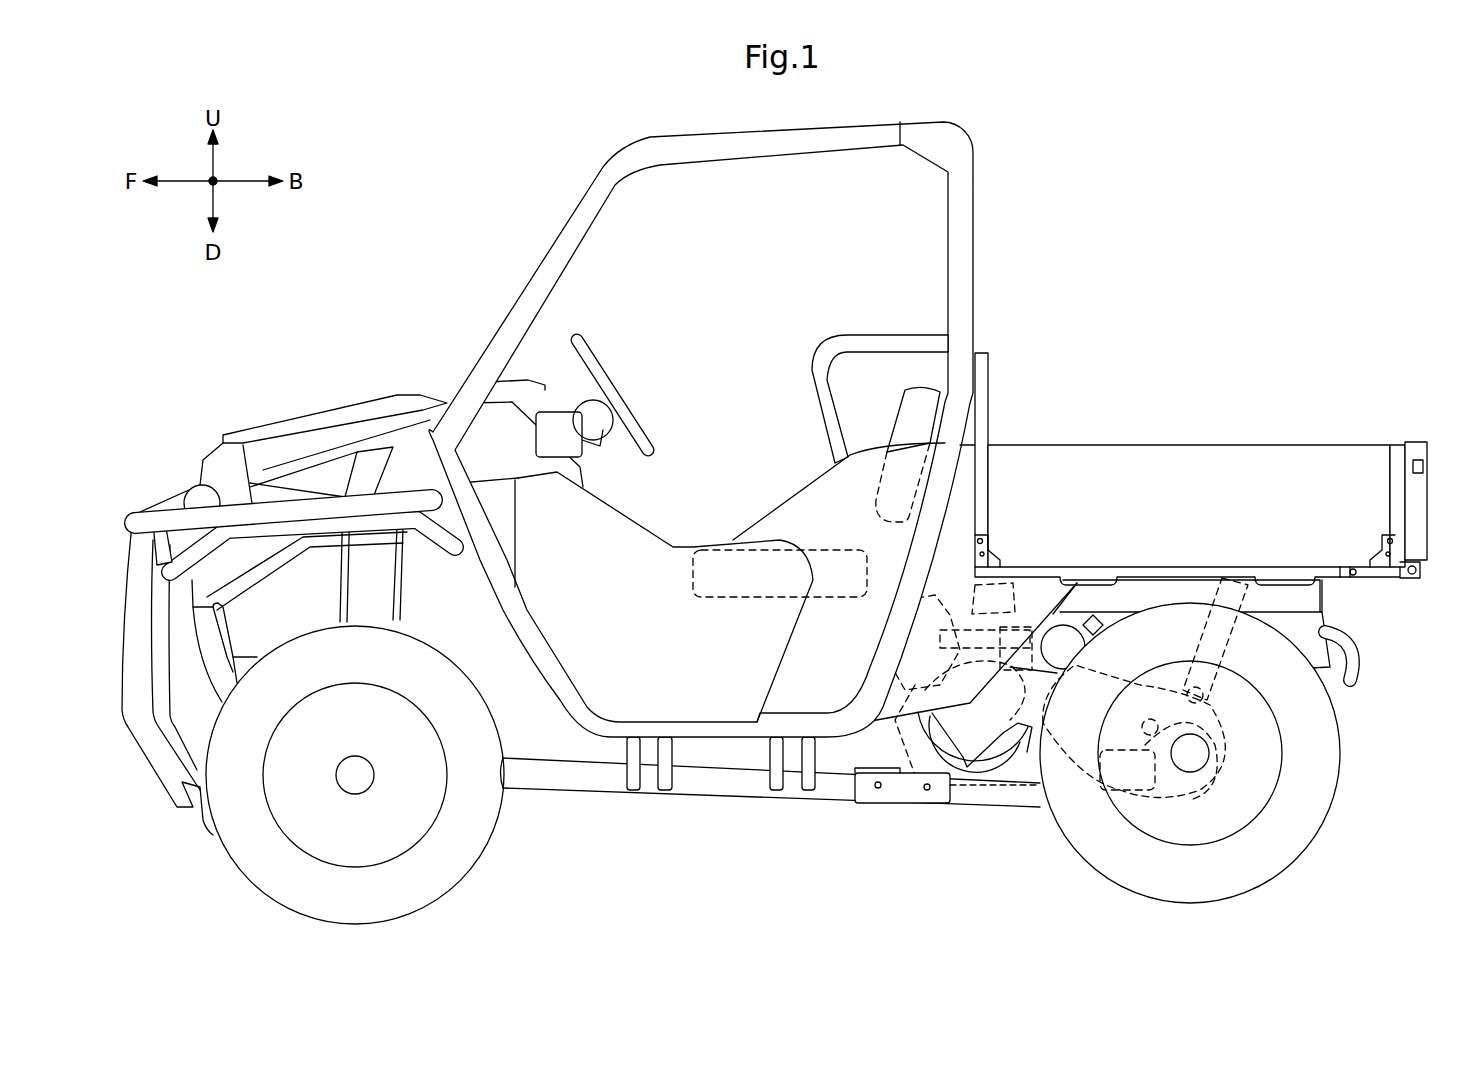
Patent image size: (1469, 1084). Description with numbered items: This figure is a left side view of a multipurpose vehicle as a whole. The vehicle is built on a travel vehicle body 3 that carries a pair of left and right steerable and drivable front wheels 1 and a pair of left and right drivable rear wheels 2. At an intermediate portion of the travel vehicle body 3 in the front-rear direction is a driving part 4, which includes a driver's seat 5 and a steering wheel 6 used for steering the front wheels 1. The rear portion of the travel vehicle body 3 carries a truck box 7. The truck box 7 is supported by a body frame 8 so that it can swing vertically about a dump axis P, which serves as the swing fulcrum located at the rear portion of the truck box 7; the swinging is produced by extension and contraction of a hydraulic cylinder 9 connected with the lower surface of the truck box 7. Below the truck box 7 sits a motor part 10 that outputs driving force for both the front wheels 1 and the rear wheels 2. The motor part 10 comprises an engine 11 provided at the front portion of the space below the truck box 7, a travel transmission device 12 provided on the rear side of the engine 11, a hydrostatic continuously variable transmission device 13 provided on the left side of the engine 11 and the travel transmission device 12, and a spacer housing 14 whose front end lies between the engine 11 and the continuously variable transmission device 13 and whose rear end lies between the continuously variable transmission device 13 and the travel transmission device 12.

The front wheels 1 is at (433, 868).
The rear wheels 2 is at (1270, 865).
The travel vehicle body 3 is at (700, 793).
The driving part 4 is at (505, 278).
The driver's seat 5 is at (893, 412).
The steering wheel 6 is at (623, 390).
The truck box 7 is at (1178, 445).
The body frame 8 is at (1297, 597).
The hydraulic cylinder 9 is at (1237, 630).
The motor part 10 is at (897, 742).
The engine 11 is at (985, 553).
The travel transmission device 12 is at (1178, 800).
The continuously variable transmission device 13 is at (977, 730).
The spacer housing 14 is at (967, 783).
The dump axis P is at (1420, 580).